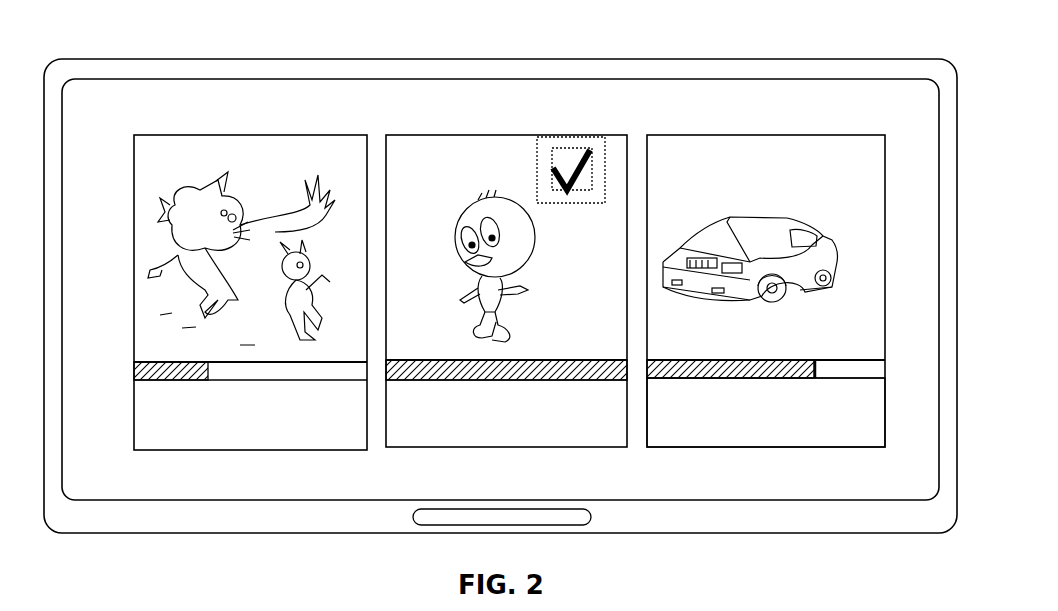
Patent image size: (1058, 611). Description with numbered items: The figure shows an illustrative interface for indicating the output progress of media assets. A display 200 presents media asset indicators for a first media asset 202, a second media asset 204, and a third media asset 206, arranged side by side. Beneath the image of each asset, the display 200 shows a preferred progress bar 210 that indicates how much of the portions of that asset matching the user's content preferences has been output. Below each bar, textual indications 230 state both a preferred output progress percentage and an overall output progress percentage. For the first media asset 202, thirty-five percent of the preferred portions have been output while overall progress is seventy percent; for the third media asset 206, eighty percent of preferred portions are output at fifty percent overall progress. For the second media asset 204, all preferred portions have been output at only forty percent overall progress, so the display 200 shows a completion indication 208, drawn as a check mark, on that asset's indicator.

The display 200 is at (508, 34).
The first media asset 202 is at (147, 135).
The second media asset 204 is at (403, 135).
The third media asset 206 is at (655, 134).
The completion indication 208 is at (566, 150).
The preferred progress bar 210 is at (830, 368).
The textual indications 230 is at (822, 447).